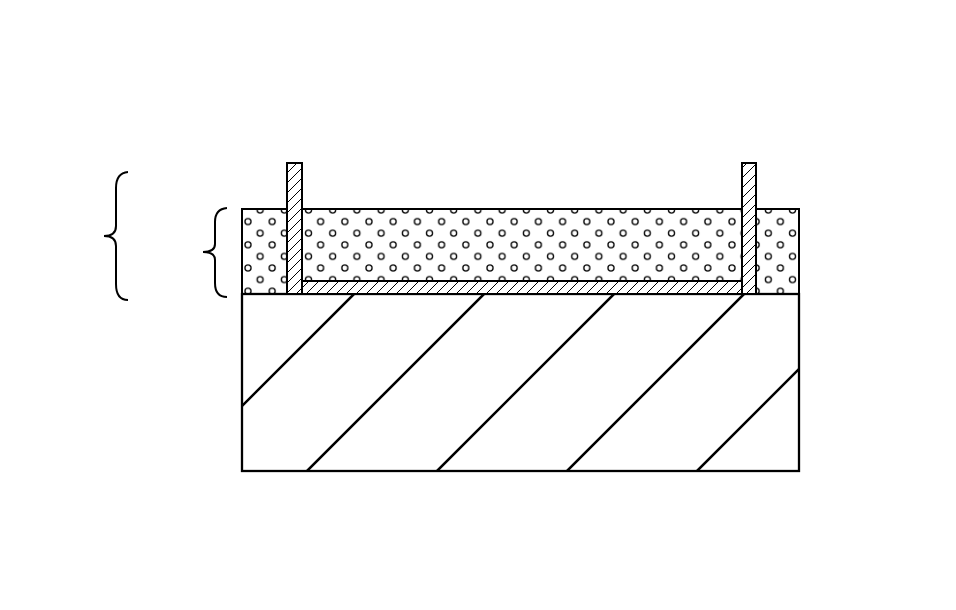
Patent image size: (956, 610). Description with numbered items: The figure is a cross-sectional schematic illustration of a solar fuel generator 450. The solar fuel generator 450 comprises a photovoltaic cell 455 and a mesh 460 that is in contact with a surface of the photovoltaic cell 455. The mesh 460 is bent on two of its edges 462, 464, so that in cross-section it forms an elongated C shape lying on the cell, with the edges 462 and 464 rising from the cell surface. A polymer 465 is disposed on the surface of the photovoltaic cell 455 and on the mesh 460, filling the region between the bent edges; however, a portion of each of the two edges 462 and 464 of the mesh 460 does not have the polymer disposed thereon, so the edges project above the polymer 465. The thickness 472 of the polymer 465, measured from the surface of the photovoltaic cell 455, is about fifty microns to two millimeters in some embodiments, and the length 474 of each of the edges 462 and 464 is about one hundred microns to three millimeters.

The solar fuel generator 450 is at (781, 64).
The photovoltaic cell 455 is at (778, 395).
The mesh 460 is at (536, 213).
The edge of the mesh 462 is at (287, 180).
The edge of the mesh 464 is at (752, 175).
The polymer 465 is at (777, 253).
The thickness of the polymer 472 is at (185, 252).
The length of the edges 474 is at (86, 236).